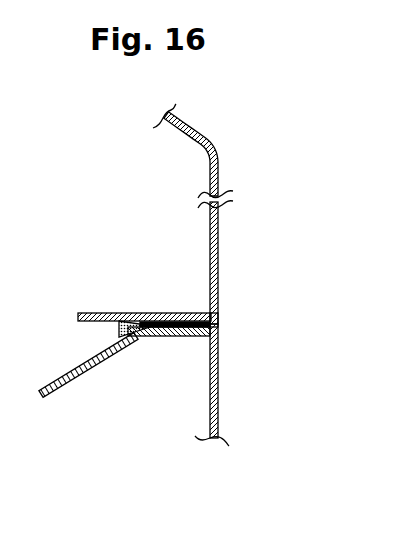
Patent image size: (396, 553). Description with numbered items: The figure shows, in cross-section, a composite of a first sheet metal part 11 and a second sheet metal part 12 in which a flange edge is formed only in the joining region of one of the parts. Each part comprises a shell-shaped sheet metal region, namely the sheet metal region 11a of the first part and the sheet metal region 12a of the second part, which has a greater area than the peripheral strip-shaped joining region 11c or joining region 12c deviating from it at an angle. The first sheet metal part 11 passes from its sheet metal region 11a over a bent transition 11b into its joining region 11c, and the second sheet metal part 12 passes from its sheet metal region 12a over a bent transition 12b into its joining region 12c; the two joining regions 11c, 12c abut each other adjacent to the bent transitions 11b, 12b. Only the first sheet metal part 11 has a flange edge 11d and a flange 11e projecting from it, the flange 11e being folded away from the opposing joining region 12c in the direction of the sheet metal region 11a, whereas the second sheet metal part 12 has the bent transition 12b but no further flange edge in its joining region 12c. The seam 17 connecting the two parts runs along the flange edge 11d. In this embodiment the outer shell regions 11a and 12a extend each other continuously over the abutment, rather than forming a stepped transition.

The first sheet metal part 11 is at (230, 428).
The sheet metal region of first sheet metal part 11a is at (217, 393).
The bent transition of first sheet metal part 11b is at (220, 328).
The joining region of first sheet metal part 11c is at (188, 337).
The flange edge of first sheet metal part 11d is at (137, 341).
The flange of first sheet metal part 11e is at (50, 398).
The second sheet metal part 12 is at (222, 157).
The sheet metal region of second sheet metal part 12a is at (217, 257).
The bent transition of second sheet metal part 12b is at (220, 327).
The joining region of second sheet metal part 12c is at (161, 313).
The seam 17 is at (120, 327).